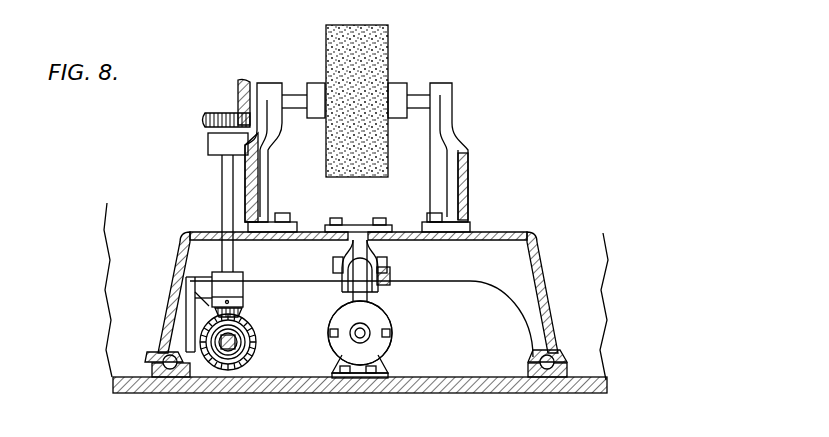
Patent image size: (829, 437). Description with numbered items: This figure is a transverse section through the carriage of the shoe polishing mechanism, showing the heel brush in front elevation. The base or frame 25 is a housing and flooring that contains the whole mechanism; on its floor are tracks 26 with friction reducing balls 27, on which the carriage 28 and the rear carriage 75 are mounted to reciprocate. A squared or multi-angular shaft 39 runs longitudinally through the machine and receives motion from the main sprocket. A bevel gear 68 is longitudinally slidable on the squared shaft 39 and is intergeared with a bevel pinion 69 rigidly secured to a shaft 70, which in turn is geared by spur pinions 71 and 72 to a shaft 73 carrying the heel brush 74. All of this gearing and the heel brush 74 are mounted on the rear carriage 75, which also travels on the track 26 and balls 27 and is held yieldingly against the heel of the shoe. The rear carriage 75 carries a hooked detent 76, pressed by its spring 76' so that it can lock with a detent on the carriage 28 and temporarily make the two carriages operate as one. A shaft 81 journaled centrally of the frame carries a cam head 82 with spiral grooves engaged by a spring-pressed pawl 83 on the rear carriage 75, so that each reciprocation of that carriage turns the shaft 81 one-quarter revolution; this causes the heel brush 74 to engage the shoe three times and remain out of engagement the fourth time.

The base or frame 25 is at (307, 386).
The tracks 26 is at (533, 377).
The balls 27 is at (169, 370).
The carriage 28 is at (541, 281).
The squared or multi-angular shaft 39 is at (238, 338).
The bevel gear 68 is at (256, 349).
The bevel pinion 69 is at (244, 308).
The shaft 70 is at (222, 210).
The spur pinion 71 is at (213, 113).
The spur pinion 72 is at (246, 80).
The shaft 73 is at (295, 95).
The heel brush 74 is at (383, 53).
The rear carriage 75 is at (539, 232).
The hooked detent 76 is at (352, 302).
The spring 76' is at (408, 268).
The shaft 81 is at (381, 331).
The cam head 82 is at (384, 349).
The spring-pressed pawl 83 is at (363, 318).